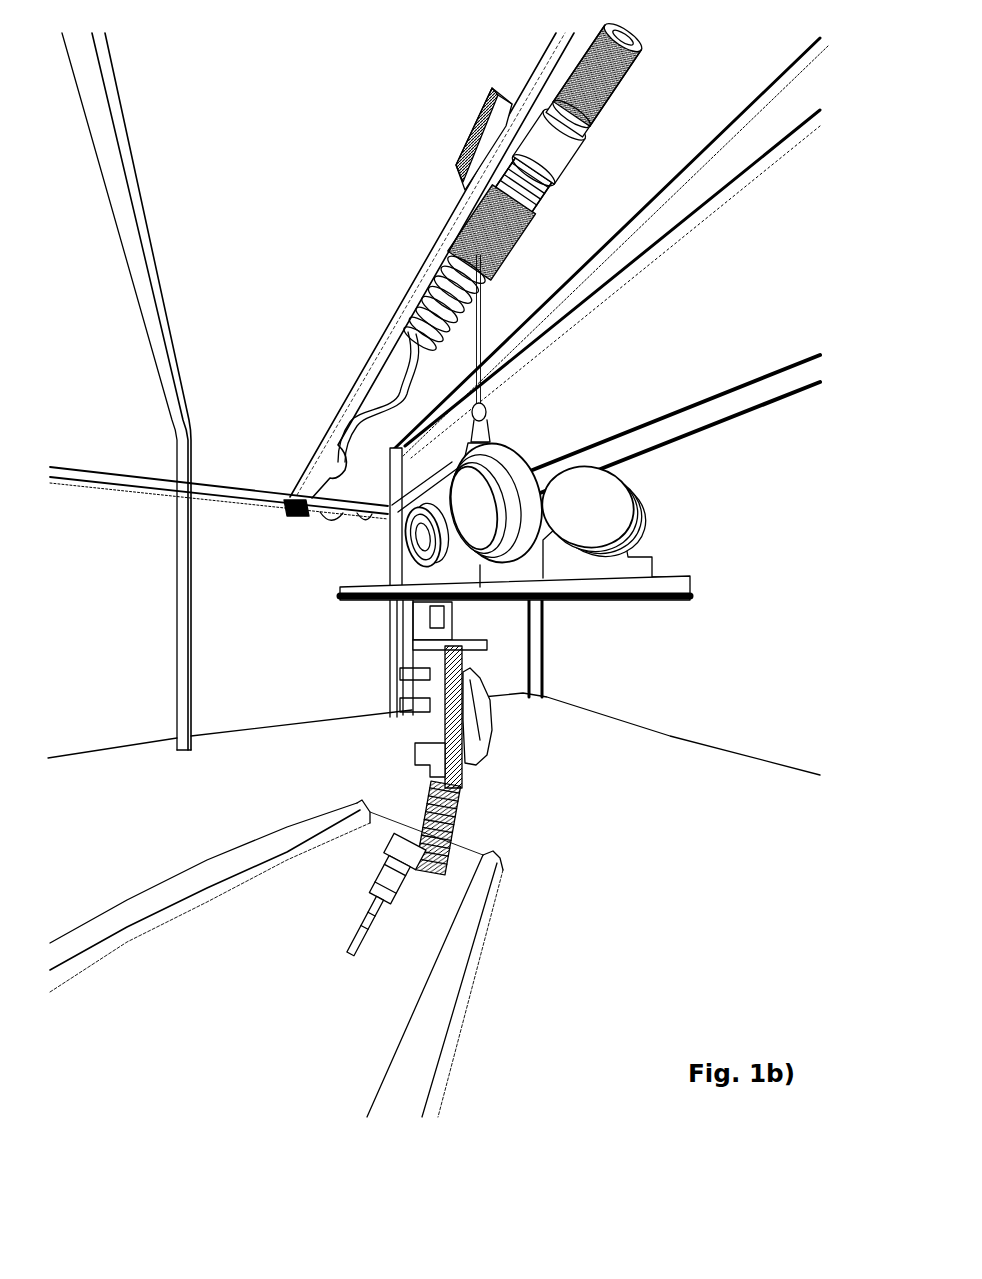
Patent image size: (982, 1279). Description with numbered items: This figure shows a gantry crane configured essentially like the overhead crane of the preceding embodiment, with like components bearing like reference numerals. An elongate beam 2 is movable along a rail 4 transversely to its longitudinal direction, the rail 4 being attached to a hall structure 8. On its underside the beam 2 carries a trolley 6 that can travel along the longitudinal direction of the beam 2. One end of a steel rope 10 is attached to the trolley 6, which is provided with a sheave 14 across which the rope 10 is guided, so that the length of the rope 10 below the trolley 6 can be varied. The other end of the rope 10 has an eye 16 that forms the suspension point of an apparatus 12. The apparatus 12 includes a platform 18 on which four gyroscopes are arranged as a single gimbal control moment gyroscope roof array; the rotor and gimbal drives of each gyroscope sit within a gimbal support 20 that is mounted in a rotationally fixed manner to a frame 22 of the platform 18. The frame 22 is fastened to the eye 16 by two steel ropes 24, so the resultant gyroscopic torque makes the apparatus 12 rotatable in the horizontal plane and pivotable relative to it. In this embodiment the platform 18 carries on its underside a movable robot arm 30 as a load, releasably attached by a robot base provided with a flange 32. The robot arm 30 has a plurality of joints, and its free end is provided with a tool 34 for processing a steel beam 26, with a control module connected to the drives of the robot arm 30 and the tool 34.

The elongate beam 2 is at (298, 496).
The rail 4 is at (62, 467).
The trolley 6 is at (598, 97).
The hall structure 8 is at (123, 206).
The steel rope 10 is at (480, 333).
The apparatus 12 is at (703, 514).
The sheave 14 is at (515, 232).
The eye 16 is at (495, 427).
The platform 18 is at (366, 603).
The gimbal support 20 is at (523, 463).
The frame 22 is at (398, 557).
The steel ropes 24 is at (468, 462).
The steel beam 26 is at (436, 1032).
The robot arm 30 is at (470, 722).
The flange 32 is at (456, 612).
The tool 34 is at (382, 878).